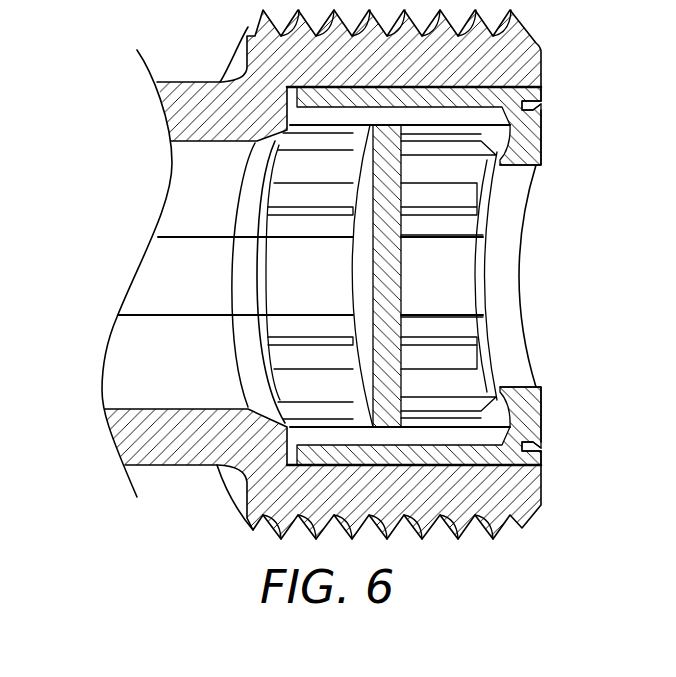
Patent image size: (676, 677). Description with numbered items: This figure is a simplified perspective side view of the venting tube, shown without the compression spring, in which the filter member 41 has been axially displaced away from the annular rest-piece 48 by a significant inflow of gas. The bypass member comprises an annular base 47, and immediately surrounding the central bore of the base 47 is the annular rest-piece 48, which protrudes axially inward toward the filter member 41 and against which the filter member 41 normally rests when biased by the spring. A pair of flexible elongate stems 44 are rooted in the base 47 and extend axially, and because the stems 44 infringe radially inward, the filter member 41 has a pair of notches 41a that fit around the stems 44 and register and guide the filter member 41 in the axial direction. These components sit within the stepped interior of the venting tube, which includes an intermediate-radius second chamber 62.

The filter member 41 is at (392, 273).
The notches 41a is at (362, 285).
The flexible elongate stems 44 is at (150, 275).
The annular base 47 is at (531, 132).
The annular rest-piece 48 is at (507, 392).
The second chamber 62 is at (118, 362).